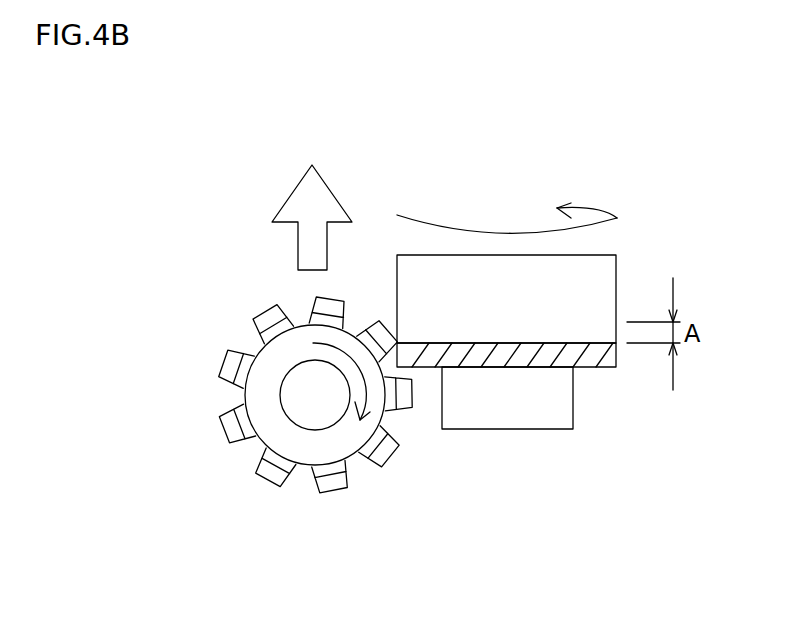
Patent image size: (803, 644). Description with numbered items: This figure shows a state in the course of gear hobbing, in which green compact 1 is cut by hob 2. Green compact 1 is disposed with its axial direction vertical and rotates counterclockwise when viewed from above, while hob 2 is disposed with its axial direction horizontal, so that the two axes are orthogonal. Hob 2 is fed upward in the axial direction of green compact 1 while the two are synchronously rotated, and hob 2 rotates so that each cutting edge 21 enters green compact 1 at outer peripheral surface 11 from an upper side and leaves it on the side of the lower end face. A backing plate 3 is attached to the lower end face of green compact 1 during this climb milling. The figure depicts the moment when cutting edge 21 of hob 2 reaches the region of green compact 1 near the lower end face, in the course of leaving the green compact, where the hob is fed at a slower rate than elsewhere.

The green compact 1 is at (539, 291).
The outer peripheral surface 11 is at (590, 283).
The backing plate 3 is at (616, 357).
The hob 2 is at (283, 354).
The cutting edge 21 is at (385, 325).